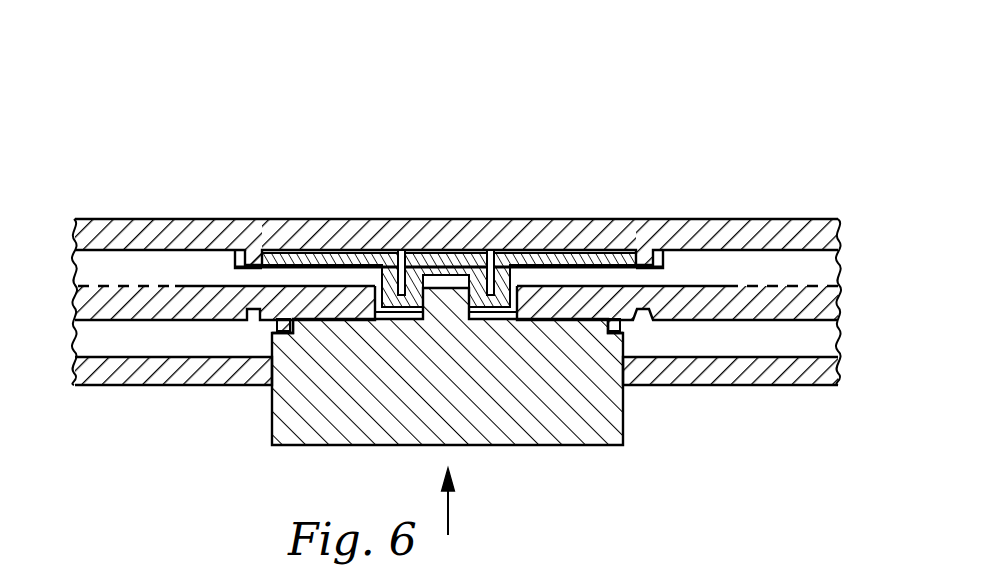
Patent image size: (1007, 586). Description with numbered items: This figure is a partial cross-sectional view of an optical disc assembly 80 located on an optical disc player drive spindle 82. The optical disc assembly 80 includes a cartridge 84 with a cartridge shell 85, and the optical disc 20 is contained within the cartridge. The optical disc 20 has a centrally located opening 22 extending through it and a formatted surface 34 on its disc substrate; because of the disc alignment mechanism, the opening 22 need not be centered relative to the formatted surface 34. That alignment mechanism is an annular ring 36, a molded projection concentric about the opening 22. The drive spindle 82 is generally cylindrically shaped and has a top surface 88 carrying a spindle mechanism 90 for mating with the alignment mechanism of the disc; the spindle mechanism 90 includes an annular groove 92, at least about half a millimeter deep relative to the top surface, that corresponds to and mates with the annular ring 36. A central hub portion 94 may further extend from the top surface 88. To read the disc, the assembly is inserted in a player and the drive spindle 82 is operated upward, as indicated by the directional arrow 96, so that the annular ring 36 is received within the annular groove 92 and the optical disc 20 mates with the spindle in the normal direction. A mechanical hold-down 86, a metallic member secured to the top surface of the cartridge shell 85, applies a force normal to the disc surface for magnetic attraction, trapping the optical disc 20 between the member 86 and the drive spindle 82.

The optical disc assembly 80 is at (194, 94).
The optical disc player drive spindle 82 is at (353, 446).
The cartridge 84 is at (733, 192).
The cartridge shell 85 is at (755, 219).
The mechanical hold-down 86 is at (333, 268).
The top surface 88 is at (318, 262).
The spindle mechanism 90 is at (290, 334).
The annular groove 92 is at (290, 325).
The central hub portion 94 is at (446, 260).
The opening 22 is at (499, 262).
The formatted surface 34 is at (99, 287).
The annular ring 36 is at (277, 331).
The optical disc 20 is at (96, 329).
The directional arrow 96 is at (448, 503).